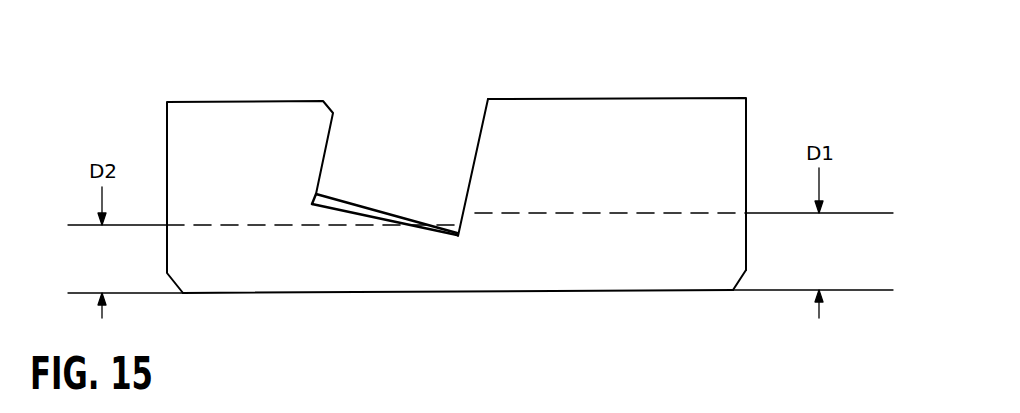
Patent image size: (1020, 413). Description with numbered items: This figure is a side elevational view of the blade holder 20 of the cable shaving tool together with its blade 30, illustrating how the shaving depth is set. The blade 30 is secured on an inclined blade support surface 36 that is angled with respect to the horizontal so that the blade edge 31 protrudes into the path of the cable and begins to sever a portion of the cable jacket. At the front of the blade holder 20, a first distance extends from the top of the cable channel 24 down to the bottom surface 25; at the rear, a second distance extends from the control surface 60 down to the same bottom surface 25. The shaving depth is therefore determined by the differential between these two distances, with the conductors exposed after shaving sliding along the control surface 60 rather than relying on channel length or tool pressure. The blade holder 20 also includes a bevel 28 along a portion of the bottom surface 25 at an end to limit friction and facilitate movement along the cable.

The blade holder 20 is at (556, 165).
The cable channel 24 is at (683, 213).
The bottom surface 25 is at (545, 293).
The bevel 28 is at (731, 288).
The blade 30 is at (372, 207).
The blade edge 31 is at (440, 237).
The blade support surface 36 is at (453, 226).
The control surface 60 is at (233, 227).